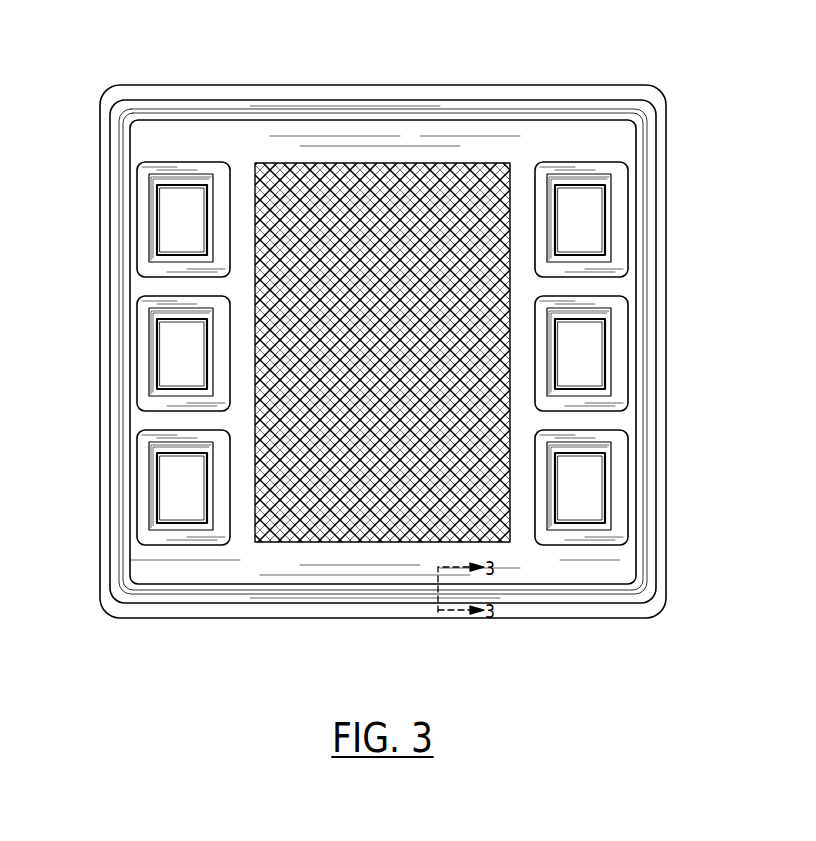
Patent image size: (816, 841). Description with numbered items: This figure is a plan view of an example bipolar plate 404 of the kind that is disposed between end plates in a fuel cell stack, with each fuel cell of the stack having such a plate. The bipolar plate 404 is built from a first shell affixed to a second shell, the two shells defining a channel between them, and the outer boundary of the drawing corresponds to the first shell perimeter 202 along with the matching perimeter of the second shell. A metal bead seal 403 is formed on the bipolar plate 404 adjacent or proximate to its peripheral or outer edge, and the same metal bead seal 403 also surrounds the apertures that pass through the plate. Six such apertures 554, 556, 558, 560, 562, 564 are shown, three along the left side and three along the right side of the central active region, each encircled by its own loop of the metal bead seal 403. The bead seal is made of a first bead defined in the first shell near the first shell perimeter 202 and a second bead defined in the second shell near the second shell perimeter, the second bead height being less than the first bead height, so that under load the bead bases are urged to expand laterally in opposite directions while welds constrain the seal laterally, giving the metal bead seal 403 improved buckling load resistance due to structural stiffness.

The bipolar plate 404 is at (598, 72).
The metal bead seal 403 is at (645, 117).
The first shell perimeter 202 is at (222, 620).
The aperture 554 is at (173, 214).
The aperture 560 is at (173, 341).
The aperture 564 is at (173, 468).
The aperture 562 is at (585, 215).
The aperture 558 is at (585, 341).
The aperture 556 is at (585, 468).